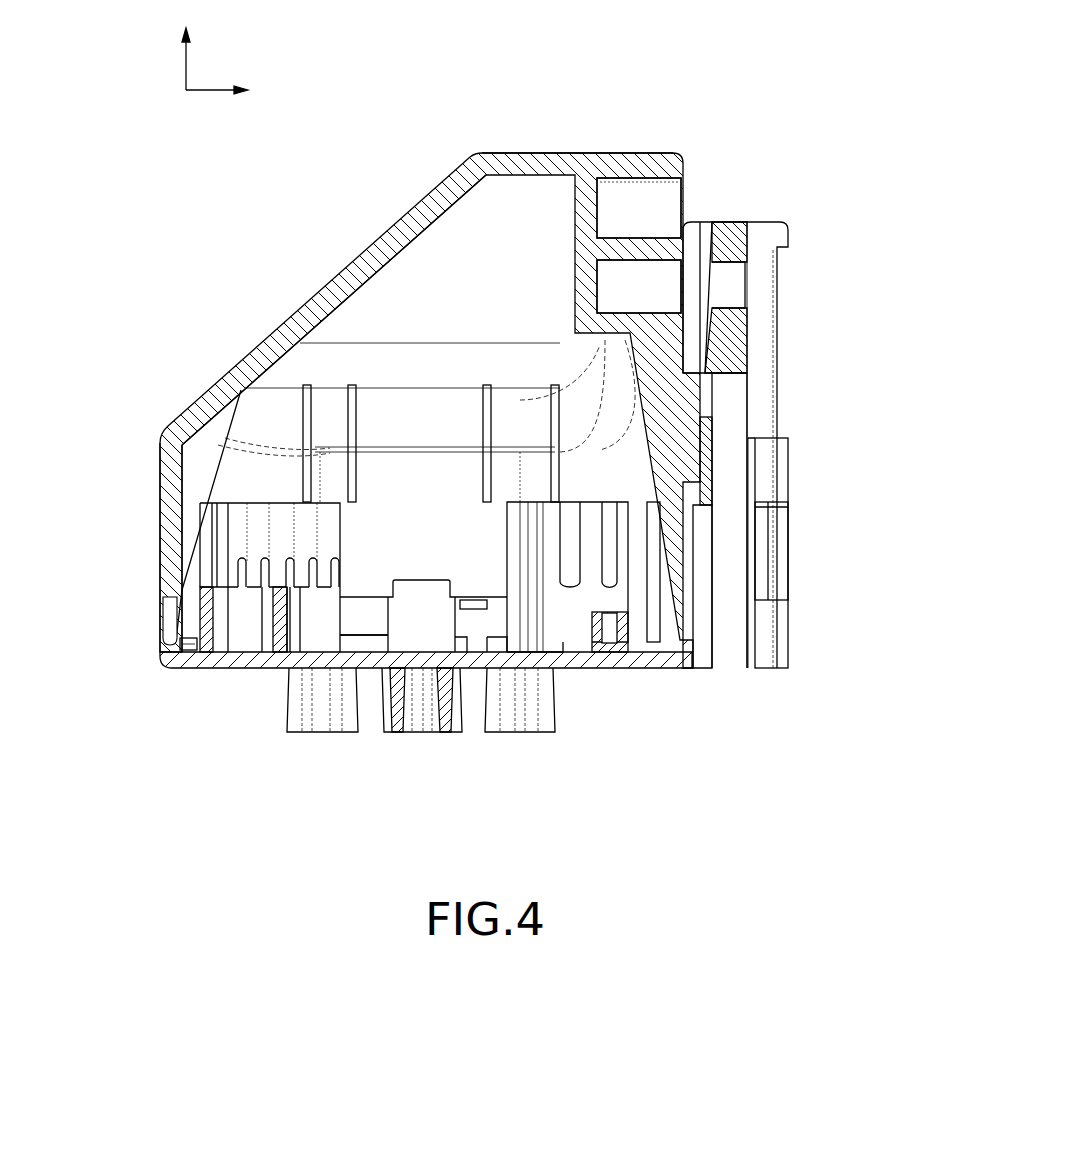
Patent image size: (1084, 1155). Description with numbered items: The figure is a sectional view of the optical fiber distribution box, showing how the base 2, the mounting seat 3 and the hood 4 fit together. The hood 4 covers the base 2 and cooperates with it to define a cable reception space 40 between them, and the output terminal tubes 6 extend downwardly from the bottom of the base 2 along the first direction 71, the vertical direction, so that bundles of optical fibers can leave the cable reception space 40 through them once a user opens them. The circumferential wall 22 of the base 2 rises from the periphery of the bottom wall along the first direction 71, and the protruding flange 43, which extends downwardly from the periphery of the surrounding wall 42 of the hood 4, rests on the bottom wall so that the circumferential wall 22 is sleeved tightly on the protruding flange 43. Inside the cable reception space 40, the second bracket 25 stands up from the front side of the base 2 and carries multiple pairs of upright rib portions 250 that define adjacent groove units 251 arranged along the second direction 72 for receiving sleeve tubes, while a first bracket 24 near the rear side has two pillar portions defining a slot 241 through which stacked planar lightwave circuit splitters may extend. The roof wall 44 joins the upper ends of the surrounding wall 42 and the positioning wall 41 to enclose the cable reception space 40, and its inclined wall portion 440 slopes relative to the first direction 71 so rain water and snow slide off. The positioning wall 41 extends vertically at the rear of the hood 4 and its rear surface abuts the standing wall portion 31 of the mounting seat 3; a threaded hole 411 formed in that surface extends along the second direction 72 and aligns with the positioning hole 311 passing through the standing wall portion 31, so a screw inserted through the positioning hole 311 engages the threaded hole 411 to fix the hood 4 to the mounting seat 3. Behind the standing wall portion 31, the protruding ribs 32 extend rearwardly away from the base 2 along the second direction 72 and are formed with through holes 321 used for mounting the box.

The base 2 is at (453, 595).
The mounting seat 3 is at (784, 394).
The hood 4 is at (430, 347).
The output terminal tubes 6 is at (523, 722).
The circumferential wall 22 is at (172, 640).
The first brackets 24 is at (646, 610).
The second bracket 25 is at (264, 601).
The standing wall portion 31 is at (737, 222).
The protruding ribs 32 is at (809, 506).
The cable reception space 40 is at (425, 468).
The positioning wall 41 is at (690, 158).
The surrounding wall 42 is at (168, 490).
The protruding flange 43 is at (188, 655).
The roof wall 44 is at (539, 140).
The first direction 71 is at (186, 45).
The second direction 72 is at (236, 91).
The slot 241 is at (640, 505).
The rib portions 250 is at (290, 556).
The groove units 251 is at (325, 556).
The positioning hole 311 is at (730, 262).
The through holes 321 is at (762, 548).
The threaded hole 411 is at (630, 262).
The inclined wall portions 440 is at (348, 268).